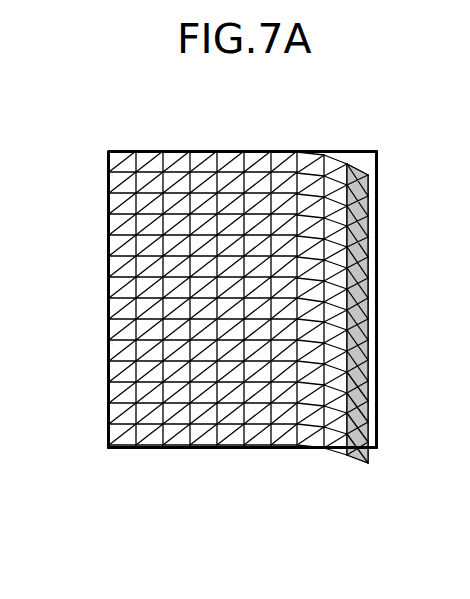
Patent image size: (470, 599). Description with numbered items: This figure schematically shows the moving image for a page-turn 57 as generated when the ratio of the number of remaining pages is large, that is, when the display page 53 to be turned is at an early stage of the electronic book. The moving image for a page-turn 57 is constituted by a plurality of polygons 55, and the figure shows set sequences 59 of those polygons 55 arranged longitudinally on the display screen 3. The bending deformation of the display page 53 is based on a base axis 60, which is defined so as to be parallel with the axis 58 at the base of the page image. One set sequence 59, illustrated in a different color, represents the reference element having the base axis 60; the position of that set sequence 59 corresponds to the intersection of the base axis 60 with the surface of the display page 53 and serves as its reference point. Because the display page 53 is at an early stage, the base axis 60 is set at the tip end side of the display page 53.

The display screen 3 is at (378, 224).
The display page 53 is at (238, 312).
The polygons 55 is at (182, 450).
The moving image for a page-turn 57 is at (238, 312).
The axis at the base of the page image 58 is at (108, 268).
The set sequences 59 is at (260, 450).
The base axis 60 is at (352, 462).